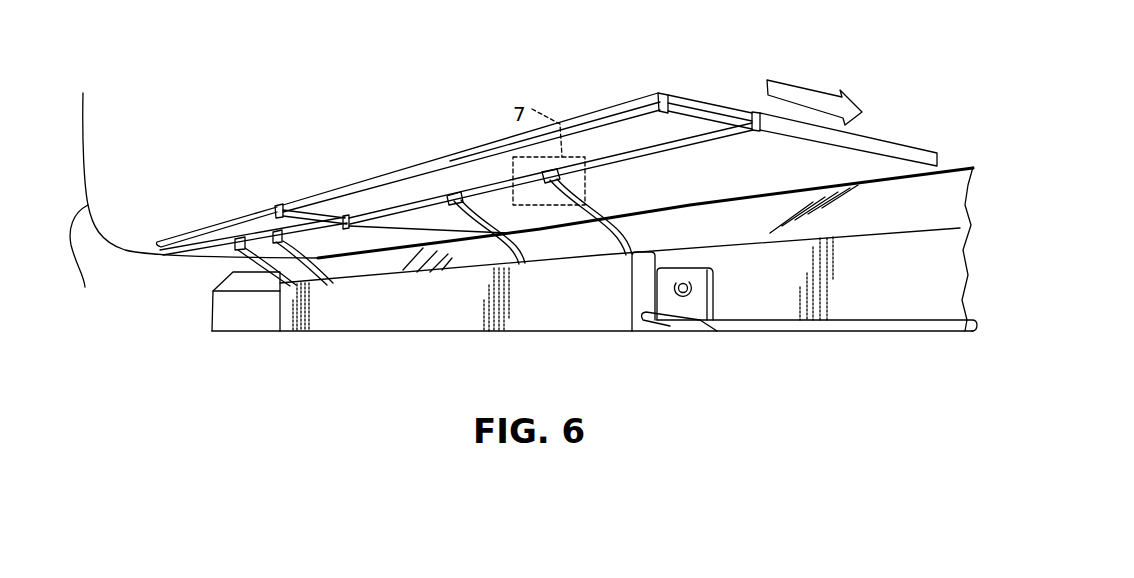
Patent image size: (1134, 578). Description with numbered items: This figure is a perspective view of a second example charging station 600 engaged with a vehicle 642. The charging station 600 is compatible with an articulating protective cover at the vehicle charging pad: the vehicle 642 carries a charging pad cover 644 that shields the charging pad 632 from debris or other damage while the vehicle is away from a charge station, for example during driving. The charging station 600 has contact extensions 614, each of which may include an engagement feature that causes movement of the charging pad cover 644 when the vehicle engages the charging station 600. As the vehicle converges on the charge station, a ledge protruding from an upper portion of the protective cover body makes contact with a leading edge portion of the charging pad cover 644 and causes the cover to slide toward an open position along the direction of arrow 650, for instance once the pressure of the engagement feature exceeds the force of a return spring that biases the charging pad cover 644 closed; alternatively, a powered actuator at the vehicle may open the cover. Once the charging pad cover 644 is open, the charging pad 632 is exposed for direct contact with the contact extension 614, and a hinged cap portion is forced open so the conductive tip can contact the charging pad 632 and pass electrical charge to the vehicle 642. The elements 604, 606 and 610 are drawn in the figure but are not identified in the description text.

The charging station 600 is at (357, 357).
The base end block 604 is at (213, 303).
The mounting plate 606 is at (863, 327).
The base frame member 610 is at (578, 297).
The contact extension 614 is at (617, 232).
The charging pad 632 is at (382, 192).
The vehicle 642 is at (194, 205).
The charging pad cover 644 is at (885, 152).
The arrow 650 is at (813, 84).